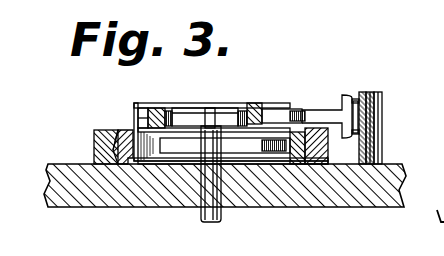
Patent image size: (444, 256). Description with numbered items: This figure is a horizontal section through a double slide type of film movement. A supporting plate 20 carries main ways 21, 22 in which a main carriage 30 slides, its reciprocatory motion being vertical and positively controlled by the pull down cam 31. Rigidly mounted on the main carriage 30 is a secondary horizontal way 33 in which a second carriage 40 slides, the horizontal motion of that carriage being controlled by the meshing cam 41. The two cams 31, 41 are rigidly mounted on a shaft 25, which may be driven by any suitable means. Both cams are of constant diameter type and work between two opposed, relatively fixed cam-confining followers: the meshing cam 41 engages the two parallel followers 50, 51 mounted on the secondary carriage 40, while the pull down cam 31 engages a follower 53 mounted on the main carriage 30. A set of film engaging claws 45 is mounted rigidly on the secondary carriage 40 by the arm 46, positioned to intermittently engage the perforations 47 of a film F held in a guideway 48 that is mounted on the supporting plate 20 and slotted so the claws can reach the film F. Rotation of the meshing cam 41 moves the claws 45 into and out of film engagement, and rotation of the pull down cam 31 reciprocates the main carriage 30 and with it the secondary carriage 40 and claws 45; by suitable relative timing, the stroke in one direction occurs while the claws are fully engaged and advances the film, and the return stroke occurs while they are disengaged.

The supporting plate 20 is at (388, 172).
The main way 21 is at (108, 130).
The main way 22 is at (298, 167).
The shaft 25 is at (216, 220).
The main carriage 30 is at (302, 162).
The cam 31 is at (251, 167).
The secondary horizontal way 33 is at (152, 104).
The secondary carriage 40 is at (253, 108).
The cam 41 is at (242, 110).
The film engaging claw 45 is at (364, 100).
The arm 46 is at (312, 112).
The perforation 47 is at (370, 138).
The guideway 48 is at (382, 151).
The follower 50 is at (158, 116).
The follower 51 is at (272, 112).
The follower 53 is at (182, 166).
The film F is at (378, 103).